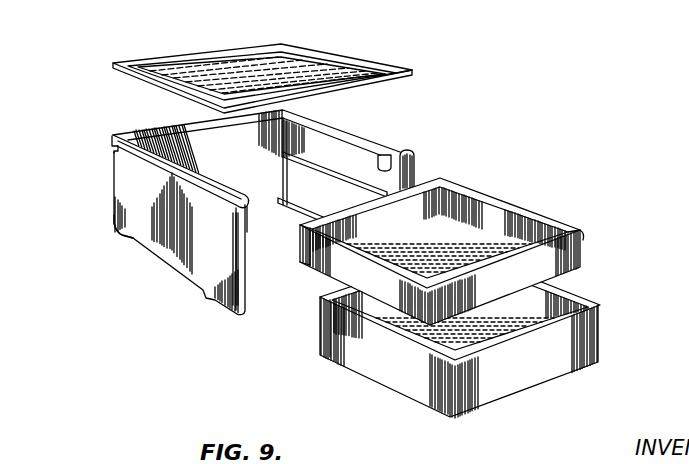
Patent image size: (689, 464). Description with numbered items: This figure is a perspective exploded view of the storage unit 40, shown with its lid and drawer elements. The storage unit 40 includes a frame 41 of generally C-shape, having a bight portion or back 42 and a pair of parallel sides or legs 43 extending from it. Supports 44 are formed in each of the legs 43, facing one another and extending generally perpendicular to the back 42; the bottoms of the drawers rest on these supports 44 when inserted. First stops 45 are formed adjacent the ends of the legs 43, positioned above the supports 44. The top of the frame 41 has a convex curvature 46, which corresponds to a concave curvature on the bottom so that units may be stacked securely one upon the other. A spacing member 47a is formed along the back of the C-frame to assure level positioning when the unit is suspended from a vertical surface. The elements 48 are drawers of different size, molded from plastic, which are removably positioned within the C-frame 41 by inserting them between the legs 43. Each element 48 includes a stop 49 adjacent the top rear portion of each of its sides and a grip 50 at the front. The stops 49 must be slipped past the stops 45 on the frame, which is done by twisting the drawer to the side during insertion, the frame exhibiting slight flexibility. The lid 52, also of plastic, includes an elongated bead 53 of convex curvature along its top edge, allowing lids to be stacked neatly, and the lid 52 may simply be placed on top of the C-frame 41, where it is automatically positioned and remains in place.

The storage unit 40 is at (520, 101).
The frame 41 is at (334, 114).
The back 42 is at (248, 207).
The legs 43 is at (416, 162).
The supports 44 is at (282, 210).
The first stops 45 is at (382, 155).
The convex curvature 46 is at (132, 130).
The spacing member 47a is at (110, 212).
The elements 48 is at (554, 207).
The stop 49 is at (305, 235).
The grip 50 is at (552, 249).
The lid 52 is at (348, 54).
The elongated bead 53 is at (398, 66).